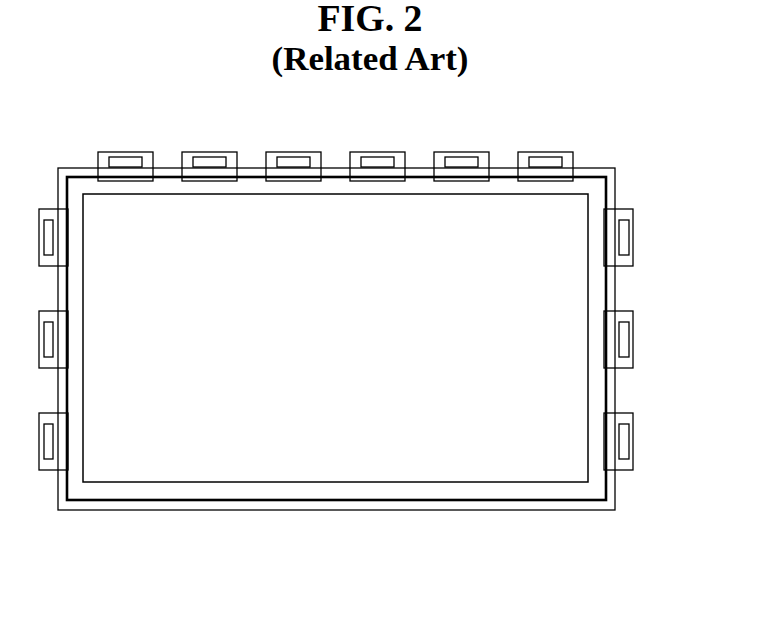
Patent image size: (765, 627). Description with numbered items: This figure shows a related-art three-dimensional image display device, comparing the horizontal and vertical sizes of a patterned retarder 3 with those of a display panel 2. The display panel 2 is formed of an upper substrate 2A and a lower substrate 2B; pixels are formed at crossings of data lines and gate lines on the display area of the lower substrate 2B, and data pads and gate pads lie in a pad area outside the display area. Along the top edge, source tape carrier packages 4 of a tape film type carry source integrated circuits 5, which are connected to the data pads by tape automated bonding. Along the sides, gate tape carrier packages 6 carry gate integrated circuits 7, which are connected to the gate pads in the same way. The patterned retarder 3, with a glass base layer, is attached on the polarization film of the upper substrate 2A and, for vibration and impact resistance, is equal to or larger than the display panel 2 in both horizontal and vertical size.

The display panel 2 is at (336, 390).
The upper substrate 2A is at (453, 567).
The lower substrate 2B is at (447, 501).
The patterned retarder 3 is at (243, 510).
The source tape carrier package 4 is at (372, 151).
The source integrated circuit 5 is at (393, 161).
The gate tape carrier package 6 is at (634, 222).
The gate integrated circuit 7 is at (629, 243).